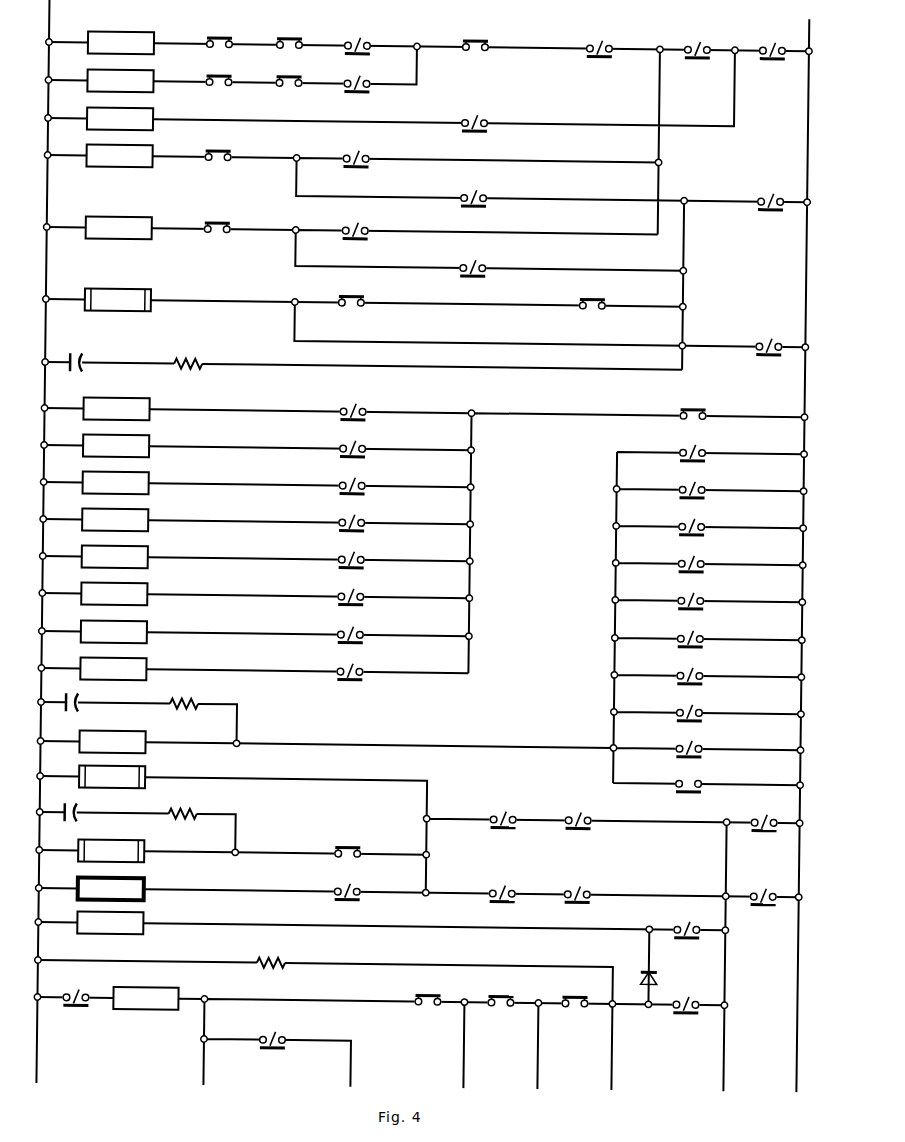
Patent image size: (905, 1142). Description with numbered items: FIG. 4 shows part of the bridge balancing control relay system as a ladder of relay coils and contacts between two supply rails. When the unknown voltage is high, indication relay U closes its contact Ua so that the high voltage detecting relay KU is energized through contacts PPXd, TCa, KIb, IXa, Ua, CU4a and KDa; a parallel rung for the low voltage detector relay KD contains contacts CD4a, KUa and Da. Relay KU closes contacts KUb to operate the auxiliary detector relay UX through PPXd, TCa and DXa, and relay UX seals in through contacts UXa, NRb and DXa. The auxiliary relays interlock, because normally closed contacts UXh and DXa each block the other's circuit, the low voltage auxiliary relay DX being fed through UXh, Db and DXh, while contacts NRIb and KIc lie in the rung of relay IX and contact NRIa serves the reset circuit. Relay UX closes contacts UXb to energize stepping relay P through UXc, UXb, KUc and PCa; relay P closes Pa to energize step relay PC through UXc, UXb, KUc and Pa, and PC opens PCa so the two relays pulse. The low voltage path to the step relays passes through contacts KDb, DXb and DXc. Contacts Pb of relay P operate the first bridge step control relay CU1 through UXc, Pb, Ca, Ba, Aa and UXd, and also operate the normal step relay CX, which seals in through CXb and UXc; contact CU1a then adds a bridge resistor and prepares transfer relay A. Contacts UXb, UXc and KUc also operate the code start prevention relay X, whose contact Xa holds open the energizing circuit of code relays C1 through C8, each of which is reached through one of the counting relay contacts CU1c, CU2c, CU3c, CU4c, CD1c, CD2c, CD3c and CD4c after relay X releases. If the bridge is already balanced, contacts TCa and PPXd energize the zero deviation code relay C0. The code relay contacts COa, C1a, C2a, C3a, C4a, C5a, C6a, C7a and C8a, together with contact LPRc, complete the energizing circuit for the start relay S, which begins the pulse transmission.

The counting relay CU4 contact CU4a is at (213, 36).
The low voltage detector relay contact KDa is at (283, 36).
The high voltage indication relay contact Ua is at (361, 28).
The relay IX contact IXa is at (469, 36).
The connecting relay contact KIb is at (603, 28).
The normal detecting relay contact TCa is at (701, 28).
The auxiliary step control relay contact PPXd is at (777, 44).
The counting relay CD4 contact CD4a is at (213, 74).
The high voltage detector relay contact KUa is at (283, 74).
The low voltage indication relay contact Da is at (361, 66).
The auxiliary low voltage detector relay contact DXa is at (213, 149).
The high voltage detector relay contact KUb is at (361, 141).
The auxiliary high voltage detector relay contact UXa is at (479, 179).
The normal reset relay contact NRb is at (776, 179).
The auxiliary high voltage detector relay contact UXh is at (213, 221).
The low voltage indication relay contact Db is at (361, 213).
The auxiliary low voltage detector relay contact DXh is at (479, 249).
The normal reset relay contact NRIb is at (348, 293).
The connecting relay contact KIc is at (589, 293).
The normal reset relay contact NRIa is at (776, 324).
The counting relay CU1 contact CU1c is at (361, 394).
The counting relay CU2 contact CU2c is at (361, 431).
The counting relay CU3 contact CU3c is at (361, 468).
The counting relay CU4 contact CU4c is at (361, 505).
The counting relay CD1 contact CD1c is at (361, 542).
The counting relay CD2 contact CD2c is at (361, 579).
The counting relay CD3 contact CD3c is at (361, 617).
The counting relay CD4 contact CD4c is at (361, 654).
The code start prevention relay contact Xa is at (691, 402).
The zero deviation code relay contact COa is at (701, 431).
The code relay C1 contact C1a is at (701, 468).
The code relay C2 contact C2a is at (701, 505).
The code relay C3 contact C3a is at (701, 542).
The code relay C4 contact C4a is at (701, 579).
The code relay C5 contact C5a is at (701, 617).
The code relay C6 contact C6a is at (701, 654).
The code relay C7 contact C7a is at (701, 691).
The code relay C8 contact C8a is at (701, 727).
The relay LPR contact LPRc is at (697, 779).
The high voltage detector relay contact KUc is at (516, 800).
The auxiliary high voltage detector relay contact UXb is at (591, 800).
The auxiliary high voltage detector relay contact UXc is at (767, 815).
The step relay PC contact PCa is at (351, 844).
The stepping relay P contact Pa is at (361, 874).
The low voltage detector relay contact KDb is at (516, 874).
The auxiliary low voltage detector relay contact DXb is at (591, 874).
The auxiliary low voltage detector relay contact DXc is at (766, 889).
The normal step relay contact CXb is at (690, 922).
The auxiliary high voltage detector relay contact UXd is at (74, 989).
The transfer relay A contact Aa is at (433, 991).
The transfer relay B contact Ba is at (506, 991).
The transfer relay C contact Ca is at (580, 991).
The stepping relay P contact Pb is at (701, 983).
The counting relay CU1 contact CU1a is at (288, 1023).